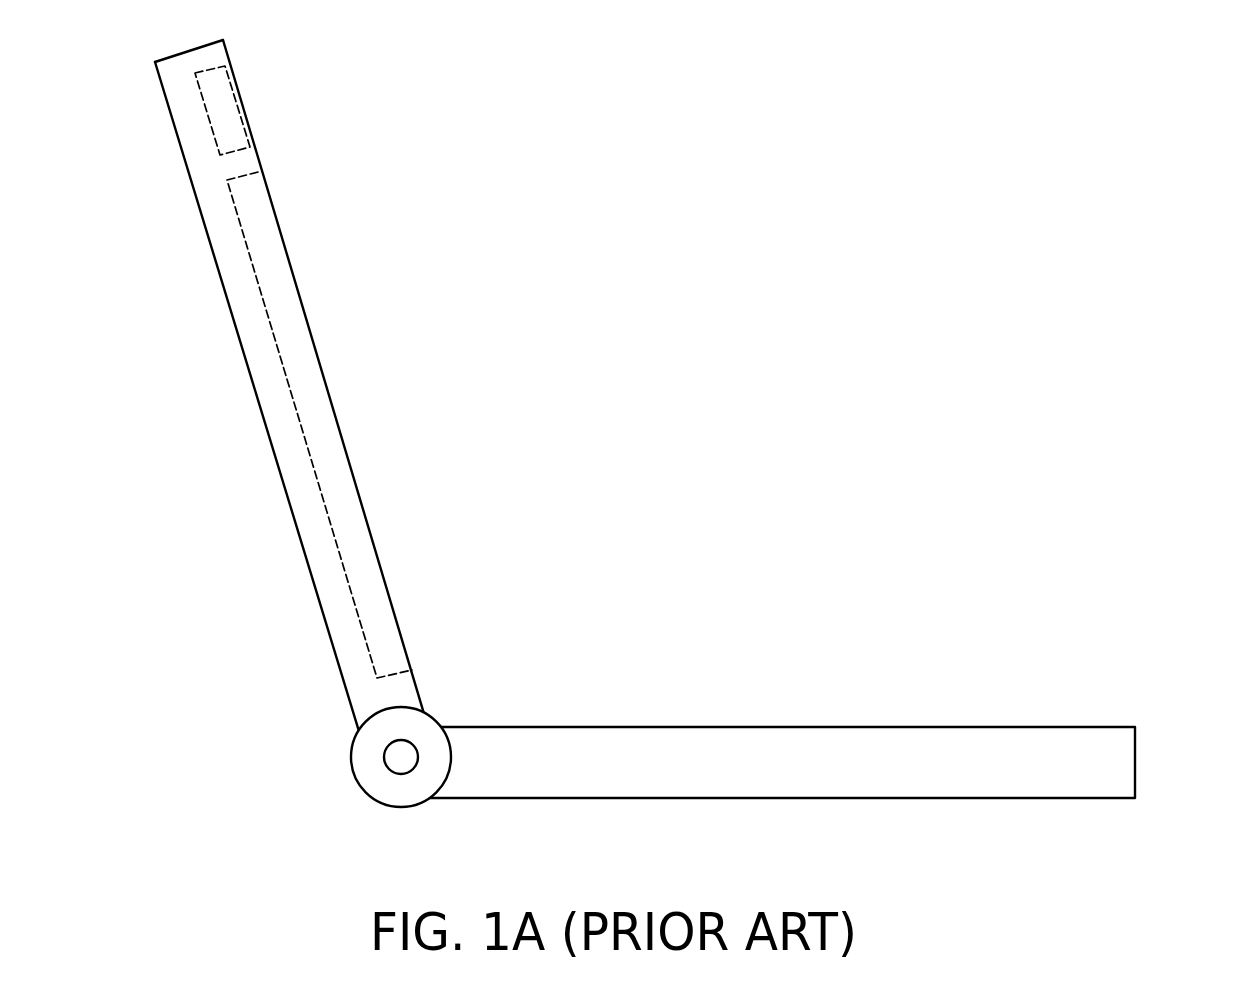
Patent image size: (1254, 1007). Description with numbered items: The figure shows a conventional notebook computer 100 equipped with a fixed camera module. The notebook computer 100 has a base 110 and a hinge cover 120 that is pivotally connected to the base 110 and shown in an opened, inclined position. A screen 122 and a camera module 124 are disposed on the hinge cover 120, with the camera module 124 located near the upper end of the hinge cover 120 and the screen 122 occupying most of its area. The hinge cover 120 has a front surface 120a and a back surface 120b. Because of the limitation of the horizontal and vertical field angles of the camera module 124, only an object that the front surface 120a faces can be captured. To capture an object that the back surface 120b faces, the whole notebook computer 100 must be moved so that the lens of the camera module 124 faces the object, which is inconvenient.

The notebook computer 100 is at (1193, 882).
The base 110 is at (1102, 758).
The hinge cover 120 is at (361, 385).
The front surface 120a is at (415, 685).
The back surface 120b is at (320, 607).
The screen 122 is at (350, 528).
The camera module 124 is at (225, 117).